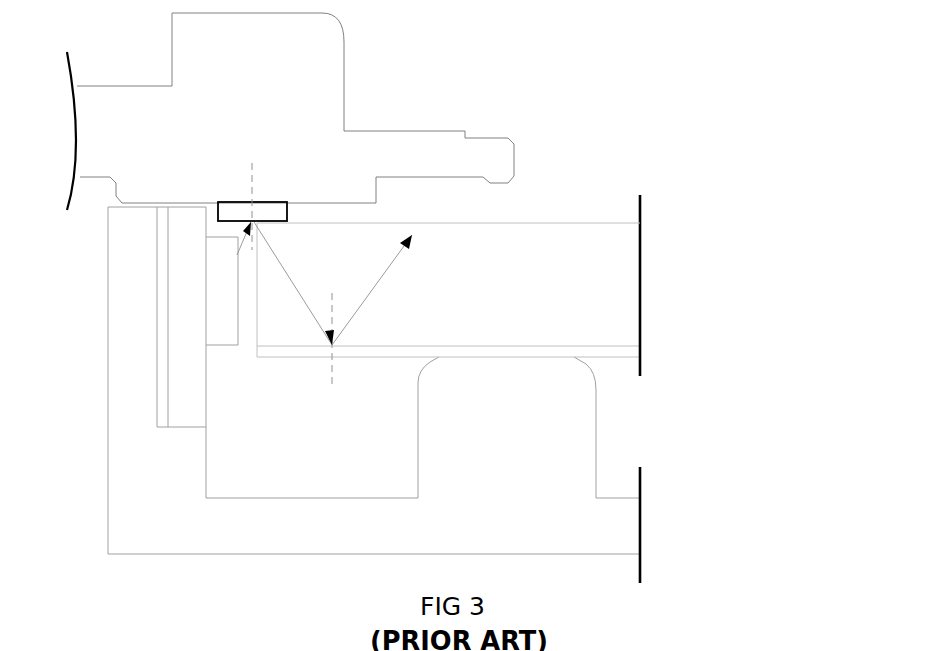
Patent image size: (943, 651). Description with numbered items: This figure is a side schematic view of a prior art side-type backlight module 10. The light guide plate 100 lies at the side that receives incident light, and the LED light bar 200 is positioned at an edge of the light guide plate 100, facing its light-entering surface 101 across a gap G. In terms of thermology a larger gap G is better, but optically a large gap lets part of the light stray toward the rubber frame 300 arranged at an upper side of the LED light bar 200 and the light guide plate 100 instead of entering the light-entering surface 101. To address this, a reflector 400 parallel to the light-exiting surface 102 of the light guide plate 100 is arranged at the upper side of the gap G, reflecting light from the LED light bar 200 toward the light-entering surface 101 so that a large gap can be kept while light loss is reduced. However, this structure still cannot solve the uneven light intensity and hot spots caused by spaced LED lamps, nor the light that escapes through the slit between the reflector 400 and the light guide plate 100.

The side-type backlight module 10 is at (703, 82).
The light guide plate 100 is at (518, 356).
The light-entering surface 101 is at (257, 283).
The light-exiting surface 102 is at (550, 223).
The LED light bar 200 is at (228, 308).
The rubber frame 300 is at (152, 115).
The reflector 400 is at (265, 212).
The gap G is at (245, 297).